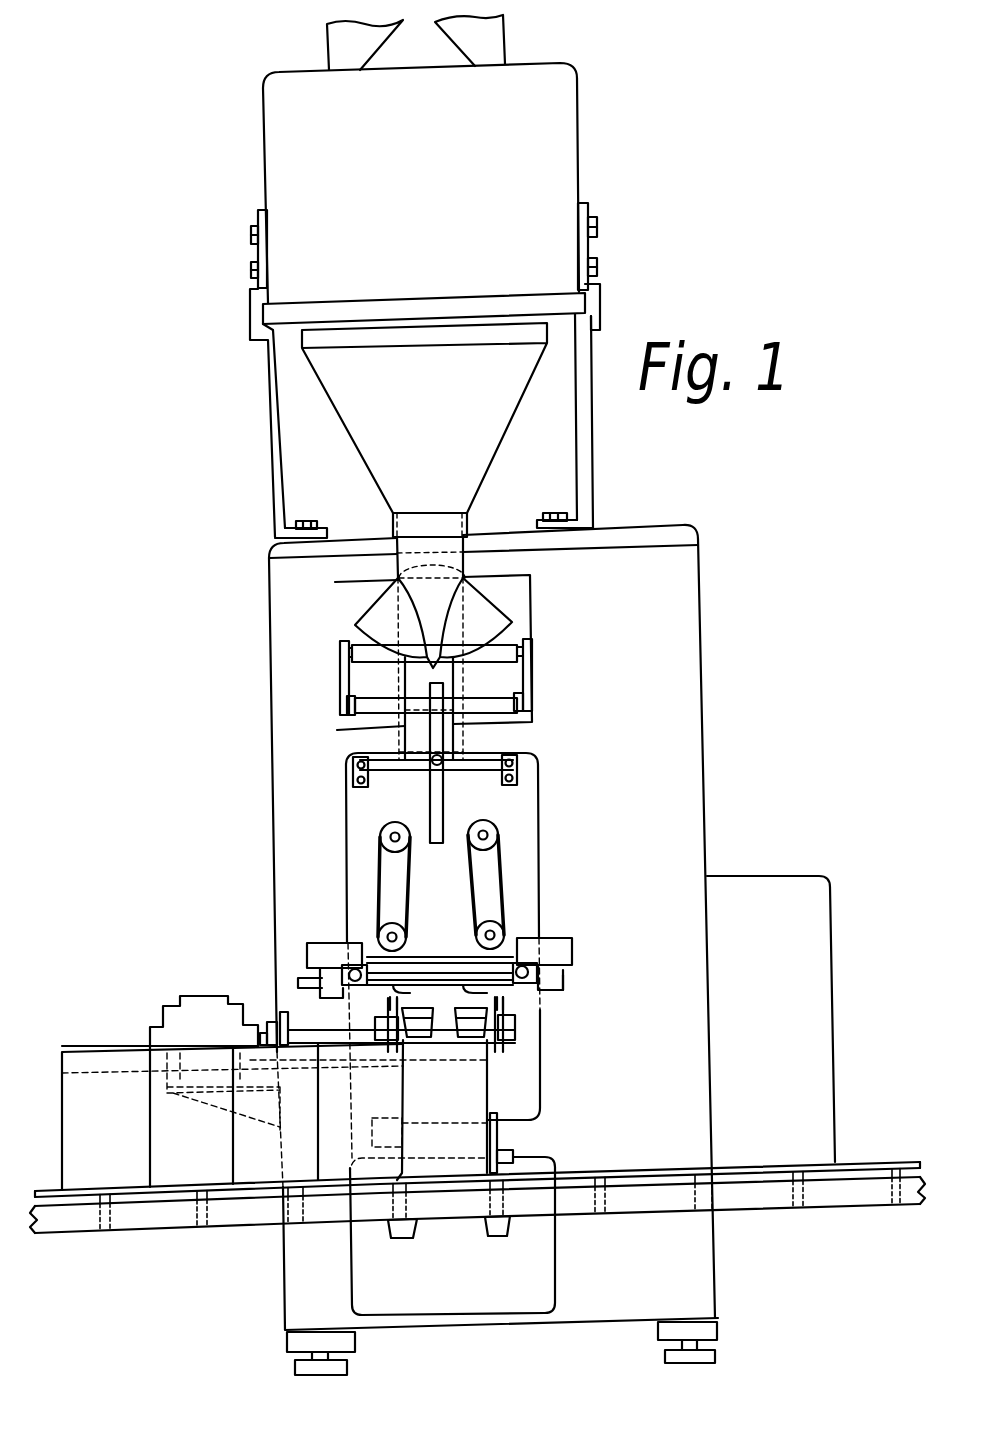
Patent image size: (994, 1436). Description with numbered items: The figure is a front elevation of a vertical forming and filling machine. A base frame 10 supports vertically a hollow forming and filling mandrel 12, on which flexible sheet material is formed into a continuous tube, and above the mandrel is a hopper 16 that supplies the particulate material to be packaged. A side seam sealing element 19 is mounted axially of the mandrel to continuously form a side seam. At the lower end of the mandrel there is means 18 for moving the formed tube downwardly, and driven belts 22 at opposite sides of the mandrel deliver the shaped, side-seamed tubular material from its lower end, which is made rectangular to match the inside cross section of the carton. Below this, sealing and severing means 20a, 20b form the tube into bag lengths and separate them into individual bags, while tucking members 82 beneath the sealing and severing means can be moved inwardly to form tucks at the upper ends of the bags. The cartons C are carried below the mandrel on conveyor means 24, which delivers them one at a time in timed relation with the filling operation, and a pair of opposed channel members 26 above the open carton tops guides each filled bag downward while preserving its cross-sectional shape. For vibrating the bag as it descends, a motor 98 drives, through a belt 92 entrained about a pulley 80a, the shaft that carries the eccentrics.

The base frame 10 is at (723, 1255).
The hollow forming and filling mandrel 12 is at (407, 677).
The hopper 16 is at (345, 414).
The means for moving the formed tube downwardly 18 is at (363, 858).
The side seam sealing element 19 is at (432, 740).
The driven belts 22 is at (503, 860).
The sealing and severing means 20a is at (577, 970).
The sealing and severing means 20b is at (591, 974).
The tucking members 82 is at (567, 1012).
The channel members 26 is at (460, 1041).
The cartons C is at (487, 1082).
The pulley 80a is at (267, 1025).
The belt 92 is at (272, 1025).
The motor 98 is at (188, 1002).
The conveyor means 24 is at (768, 1217).